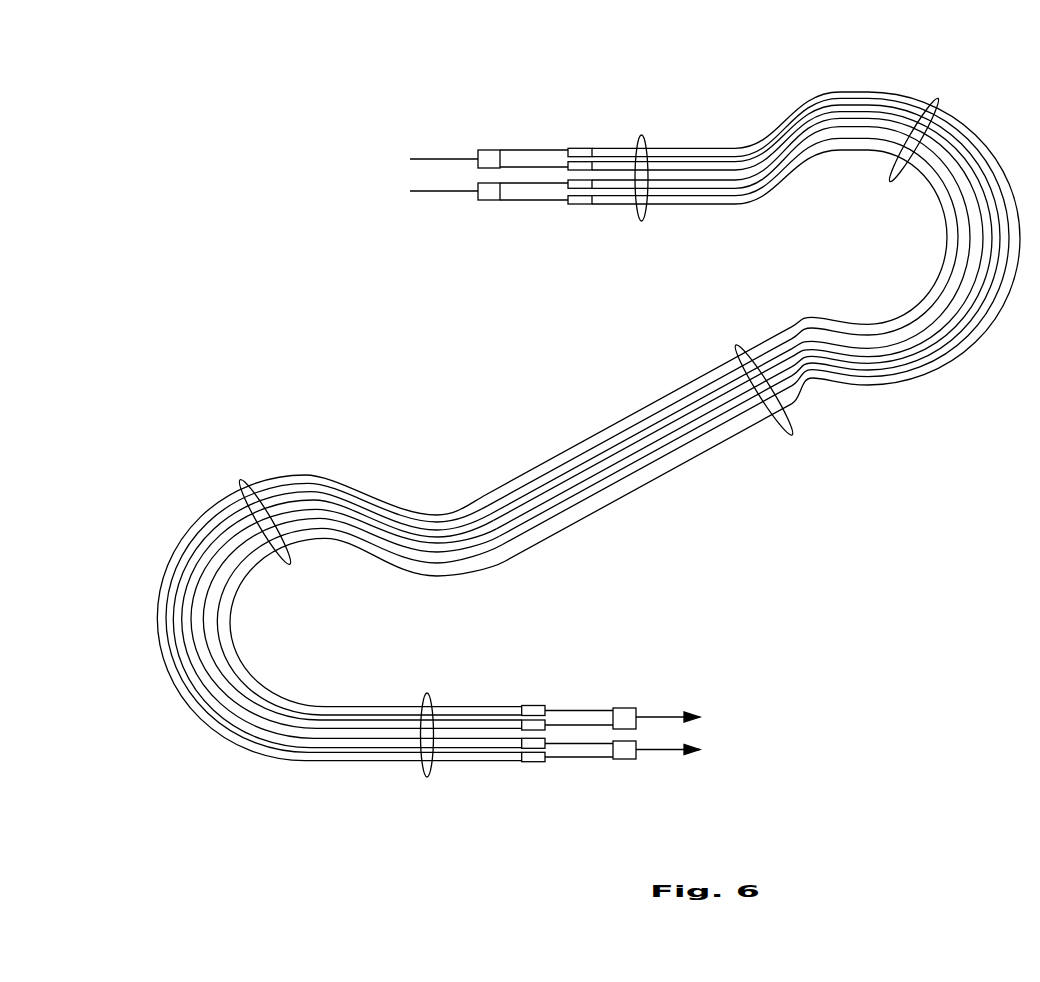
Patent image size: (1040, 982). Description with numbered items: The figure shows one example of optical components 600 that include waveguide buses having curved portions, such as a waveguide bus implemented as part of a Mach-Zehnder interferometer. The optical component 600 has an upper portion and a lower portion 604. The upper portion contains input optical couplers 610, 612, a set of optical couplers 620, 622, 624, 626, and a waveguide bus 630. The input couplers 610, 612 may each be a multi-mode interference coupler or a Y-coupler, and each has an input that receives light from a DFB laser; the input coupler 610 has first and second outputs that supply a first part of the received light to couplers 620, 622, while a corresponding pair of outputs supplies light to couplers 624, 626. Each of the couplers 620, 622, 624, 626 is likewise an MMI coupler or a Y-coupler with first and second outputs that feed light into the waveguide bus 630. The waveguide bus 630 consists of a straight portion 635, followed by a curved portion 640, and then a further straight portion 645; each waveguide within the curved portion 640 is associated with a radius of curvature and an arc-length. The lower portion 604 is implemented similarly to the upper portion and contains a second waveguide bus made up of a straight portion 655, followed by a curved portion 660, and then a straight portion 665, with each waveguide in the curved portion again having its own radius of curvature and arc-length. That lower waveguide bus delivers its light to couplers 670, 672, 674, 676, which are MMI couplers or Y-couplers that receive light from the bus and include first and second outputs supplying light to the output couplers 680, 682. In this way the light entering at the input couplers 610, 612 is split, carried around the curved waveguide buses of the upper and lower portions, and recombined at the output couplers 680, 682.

The optical components 600 is at (258, 94).
The lower portion 604 is at (307, 618).
The input optical coupler 610 is at (477, 150).
The input optical coupler 612 is at (477, 200).
The optical coupler 620 is at (568, 150).
The optical coupler 622 is at (568, 165).
The optical coupler 624 is at (568, 185).
The optical coupler 626 is at (568, 203).
The waveguide bus 630 is at (694, 93).
The straight portion 635 is at (641, 137).
The curved portion 640 is at (935, 97).
The straight portion 645 is at (790, 433).
The straight portion 655 is at (532, 470).
The curved portion 660 is at (240, 481).
The straight portion 665 is at (431, 766).
The coupler 670 is at (524, 706).
The coupler 672 is at (545, 720).
The coupler 674 is at (545, 747).
The coupler 676 is at (533, 763).
The output coupler 680 is at (632, 708).
The output coupler 682 is at (620, 759).